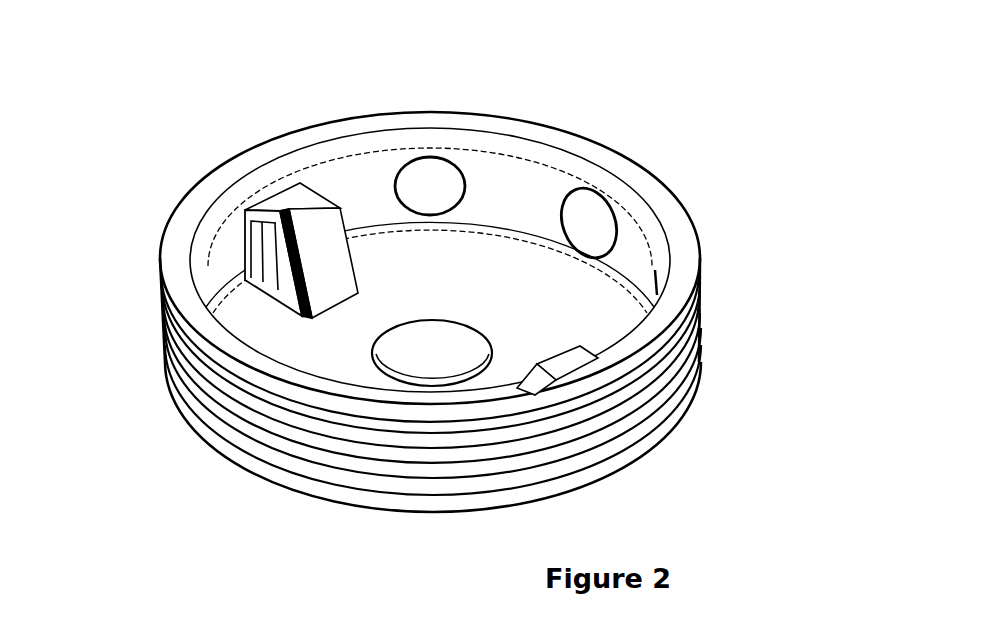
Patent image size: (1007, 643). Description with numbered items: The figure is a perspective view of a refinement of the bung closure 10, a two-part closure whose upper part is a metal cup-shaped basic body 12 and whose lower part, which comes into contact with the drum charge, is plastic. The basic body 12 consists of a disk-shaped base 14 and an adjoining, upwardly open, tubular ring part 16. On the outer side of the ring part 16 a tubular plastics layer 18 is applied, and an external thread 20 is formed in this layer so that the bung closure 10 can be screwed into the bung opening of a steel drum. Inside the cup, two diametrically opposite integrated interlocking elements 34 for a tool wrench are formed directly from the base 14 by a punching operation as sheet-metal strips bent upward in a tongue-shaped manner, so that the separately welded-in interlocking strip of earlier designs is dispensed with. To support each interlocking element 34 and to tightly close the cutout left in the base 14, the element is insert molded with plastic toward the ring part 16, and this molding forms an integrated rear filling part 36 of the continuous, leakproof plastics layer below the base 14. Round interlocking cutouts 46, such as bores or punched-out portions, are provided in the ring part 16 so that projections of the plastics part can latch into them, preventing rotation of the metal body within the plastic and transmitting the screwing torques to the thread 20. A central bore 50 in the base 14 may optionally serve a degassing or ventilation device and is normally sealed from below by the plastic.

The bung closure 10 is at (213, 502).
The cup-shaped basic body 12 is at (510, 225).
The disk-shaped base 14 is at (570, 317).
The tubular ring part 16 is at (352, 187).
The tubular plastics layer 18 is at (620, 440).
The external thread 20 is at (177, 398).
The integrated interlocking element 34 is at (310, 250).
The integrated rear filling part 36 is at (262, 256).
The interlocking cutout 46 is at (580, 232).
The bore 50 is at (422, 375).